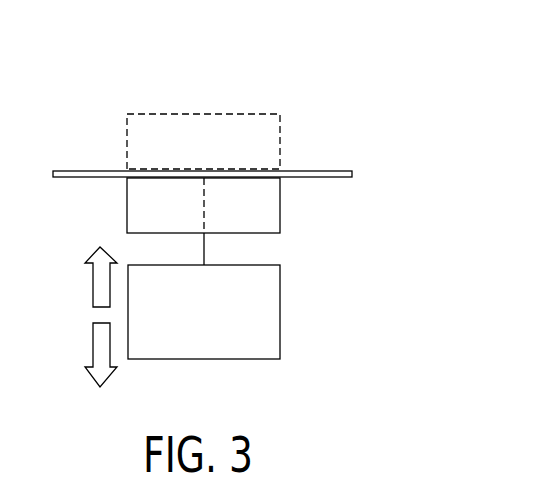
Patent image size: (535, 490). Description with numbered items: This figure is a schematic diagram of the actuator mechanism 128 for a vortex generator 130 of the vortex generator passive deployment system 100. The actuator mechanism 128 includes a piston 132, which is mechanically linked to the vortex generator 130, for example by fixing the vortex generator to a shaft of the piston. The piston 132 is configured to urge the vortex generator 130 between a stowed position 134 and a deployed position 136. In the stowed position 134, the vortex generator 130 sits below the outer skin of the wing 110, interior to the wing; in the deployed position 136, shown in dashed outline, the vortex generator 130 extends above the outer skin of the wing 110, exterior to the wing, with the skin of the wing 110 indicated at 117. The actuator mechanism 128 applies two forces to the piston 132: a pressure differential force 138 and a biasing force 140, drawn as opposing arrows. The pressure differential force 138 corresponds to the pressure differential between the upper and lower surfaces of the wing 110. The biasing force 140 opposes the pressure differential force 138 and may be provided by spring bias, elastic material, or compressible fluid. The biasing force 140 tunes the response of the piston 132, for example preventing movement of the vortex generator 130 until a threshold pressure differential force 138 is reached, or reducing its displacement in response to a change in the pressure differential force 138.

The vortex generator passive deployment system 100 is at (425, 110).
The wing 110 is at (352, 175).
The top surface of substrate 117 is at (75, 168).
The deployed position 136 is at (282, 98).
The vortex generator 130 is at (270, 128).
The stowed position 134 is at (288, 238).
The actuator mechanism 128 is at (288, 338).
The piston 132 is at (220, 342).
The pressure differential force 138 is at (97, 277).
The biasing force 140 is at (102, 345).